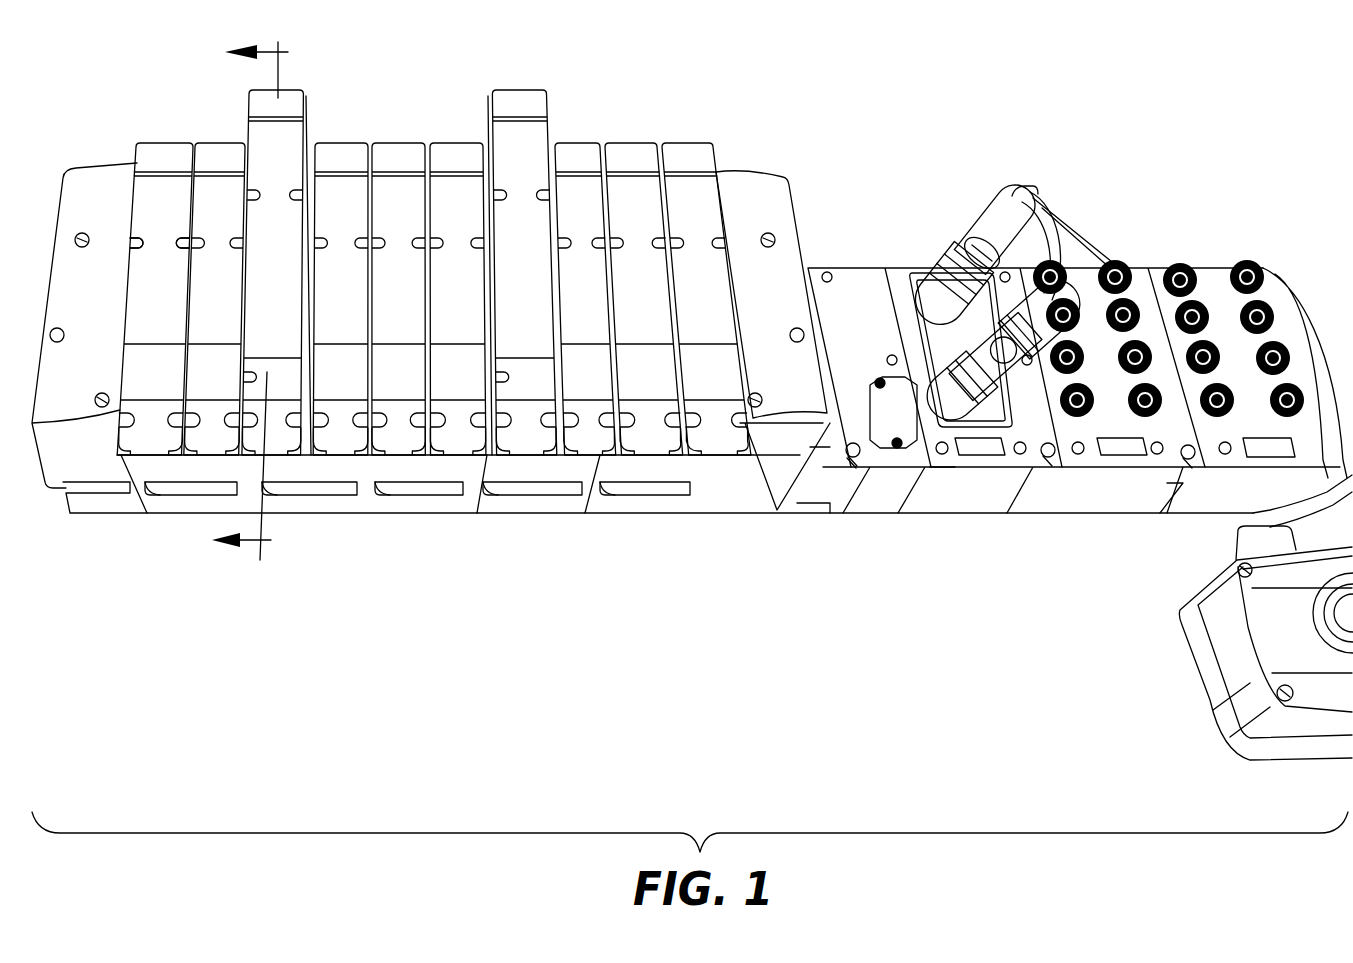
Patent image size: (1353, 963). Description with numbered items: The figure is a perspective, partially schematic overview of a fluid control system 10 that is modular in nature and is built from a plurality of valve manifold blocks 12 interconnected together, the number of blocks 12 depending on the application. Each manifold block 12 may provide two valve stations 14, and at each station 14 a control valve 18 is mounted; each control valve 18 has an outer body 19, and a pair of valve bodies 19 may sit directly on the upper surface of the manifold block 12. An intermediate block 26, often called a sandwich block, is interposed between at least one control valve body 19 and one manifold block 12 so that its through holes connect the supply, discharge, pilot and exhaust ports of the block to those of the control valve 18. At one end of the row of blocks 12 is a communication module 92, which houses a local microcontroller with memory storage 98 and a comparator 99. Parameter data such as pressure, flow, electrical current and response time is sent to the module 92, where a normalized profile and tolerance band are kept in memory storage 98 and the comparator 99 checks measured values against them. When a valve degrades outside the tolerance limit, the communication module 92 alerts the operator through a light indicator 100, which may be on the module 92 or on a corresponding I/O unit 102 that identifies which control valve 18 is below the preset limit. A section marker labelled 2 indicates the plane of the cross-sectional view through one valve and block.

The fluid control system 10 is at (704, 130).
The valve manifold block 12 is at (173, 507).
The valve station 14 is at (230, 452).
The control valve 18 is at (145, 300).
The outer body 19 is at (140, 256).
The intermediate block 26 is at (281, 437).
The communication module 92 is at (897, 273).
The memory storage 98 is at (925, 260).
The comparator 99 is at (943, 472).
The light indicator 100 is at (987, 448).
The I/O unit 102 is at (1222, 295).
The section line 2- 2 is at (236, 296).